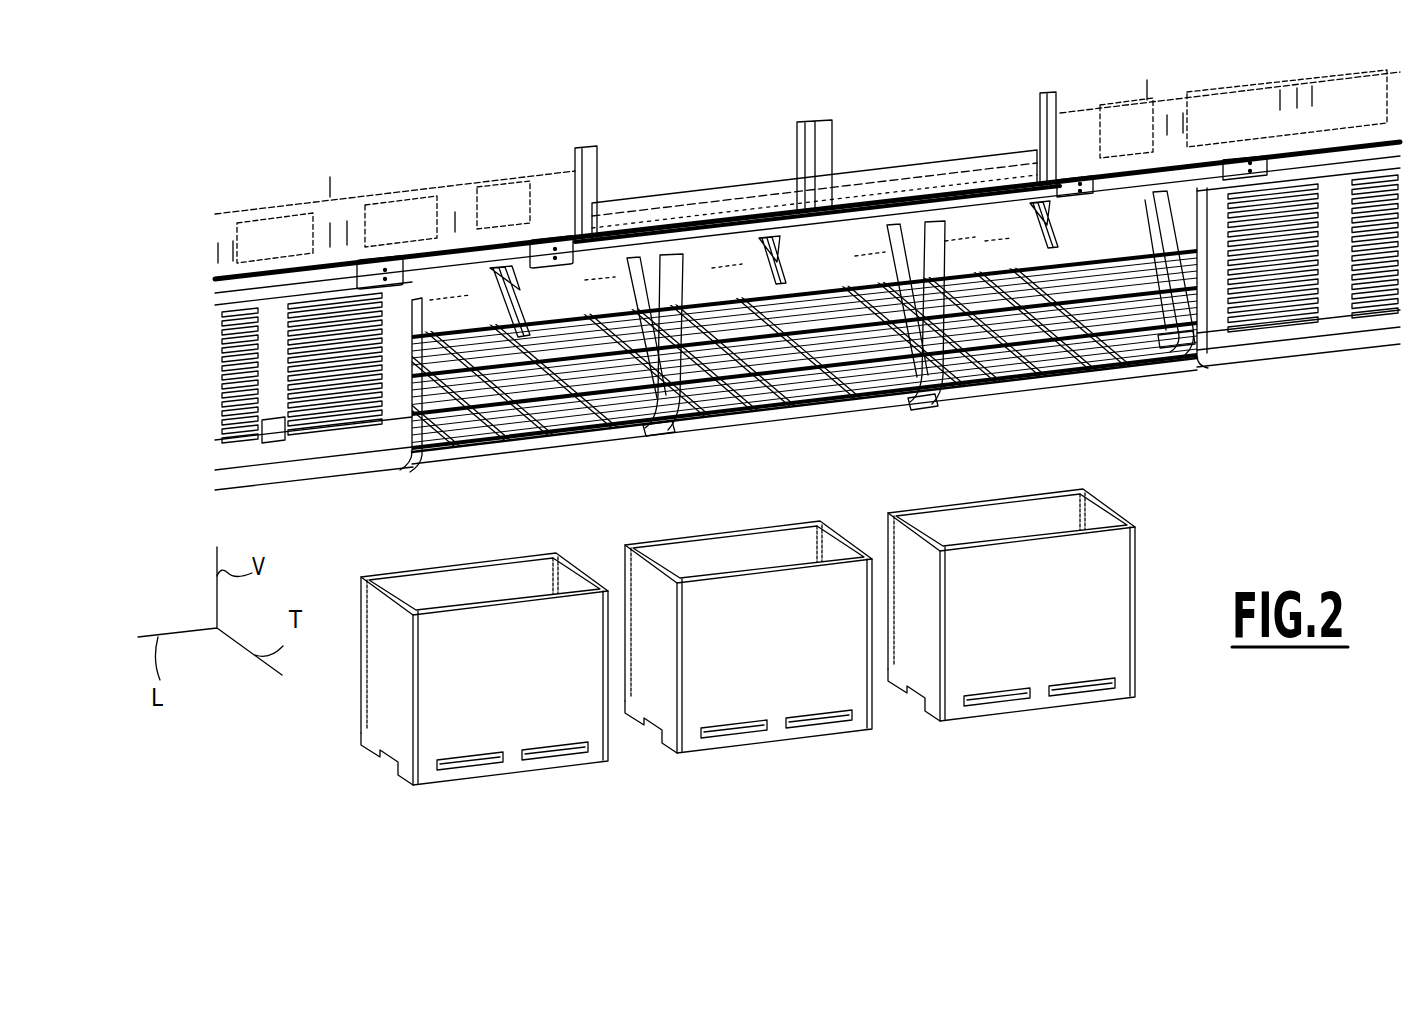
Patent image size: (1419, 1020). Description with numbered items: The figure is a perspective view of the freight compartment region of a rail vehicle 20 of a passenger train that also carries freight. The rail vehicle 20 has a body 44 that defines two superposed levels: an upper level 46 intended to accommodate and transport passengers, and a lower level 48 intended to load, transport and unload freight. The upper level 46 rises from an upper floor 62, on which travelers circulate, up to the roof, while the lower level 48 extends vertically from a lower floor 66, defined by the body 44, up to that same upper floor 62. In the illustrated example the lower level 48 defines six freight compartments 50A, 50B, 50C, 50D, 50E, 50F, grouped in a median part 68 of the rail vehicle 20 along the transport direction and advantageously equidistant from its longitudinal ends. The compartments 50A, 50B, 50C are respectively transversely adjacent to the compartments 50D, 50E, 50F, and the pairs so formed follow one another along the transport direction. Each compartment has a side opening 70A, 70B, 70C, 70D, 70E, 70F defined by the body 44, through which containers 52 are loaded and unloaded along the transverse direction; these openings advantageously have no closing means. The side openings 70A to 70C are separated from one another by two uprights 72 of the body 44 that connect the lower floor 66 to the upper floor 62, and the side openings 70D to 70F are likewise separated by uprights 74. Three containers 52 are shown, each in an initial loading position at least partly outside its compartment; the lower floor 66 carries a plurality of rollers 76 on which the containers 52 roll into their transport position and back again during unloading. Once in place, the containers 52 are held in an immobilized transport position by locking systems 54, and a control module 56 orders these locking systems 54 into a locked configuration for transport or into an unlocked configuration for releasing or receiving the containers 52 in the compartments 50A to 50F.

The rail vehicle 20 is at (257, 162).
The median part 68 is at (1046, 47).
The upper level 46 is at (814, 191).
The upper floor 62 is at (862, 207).
The side opening 70A is at (598, 277).
The side opening 70B is at (868, 252).
The side opening 70C is at (997, 237).
The side opening 70D is at (455, 297).
The side opening 70E is at (725, 265).
The side opening 70F is at (958, 237).
The uprights 74 is at (527, 288).
The lower level 48 is at (203, 377).
The control module 56 is at (275, 441).
The lower floor 66 is at (438, 460).
The body 44 is at (1337, 298).
The freight compartment 50A is at (495, 450).
The freight compartment 50B is at (778, 417).
The freight compartment 50C is at (1030, 383).
The freight compartment 50D is at (606, 421).
The freight compartment 50E is at (847, 407).
The freight compartment 50F is at (1117, 367).
The locking systems 54 is at (534, 450).
The uprights 72 is at (697, 433).
The rollers 76 is at (1080, 377).
The containers 52 is at (968, 672).